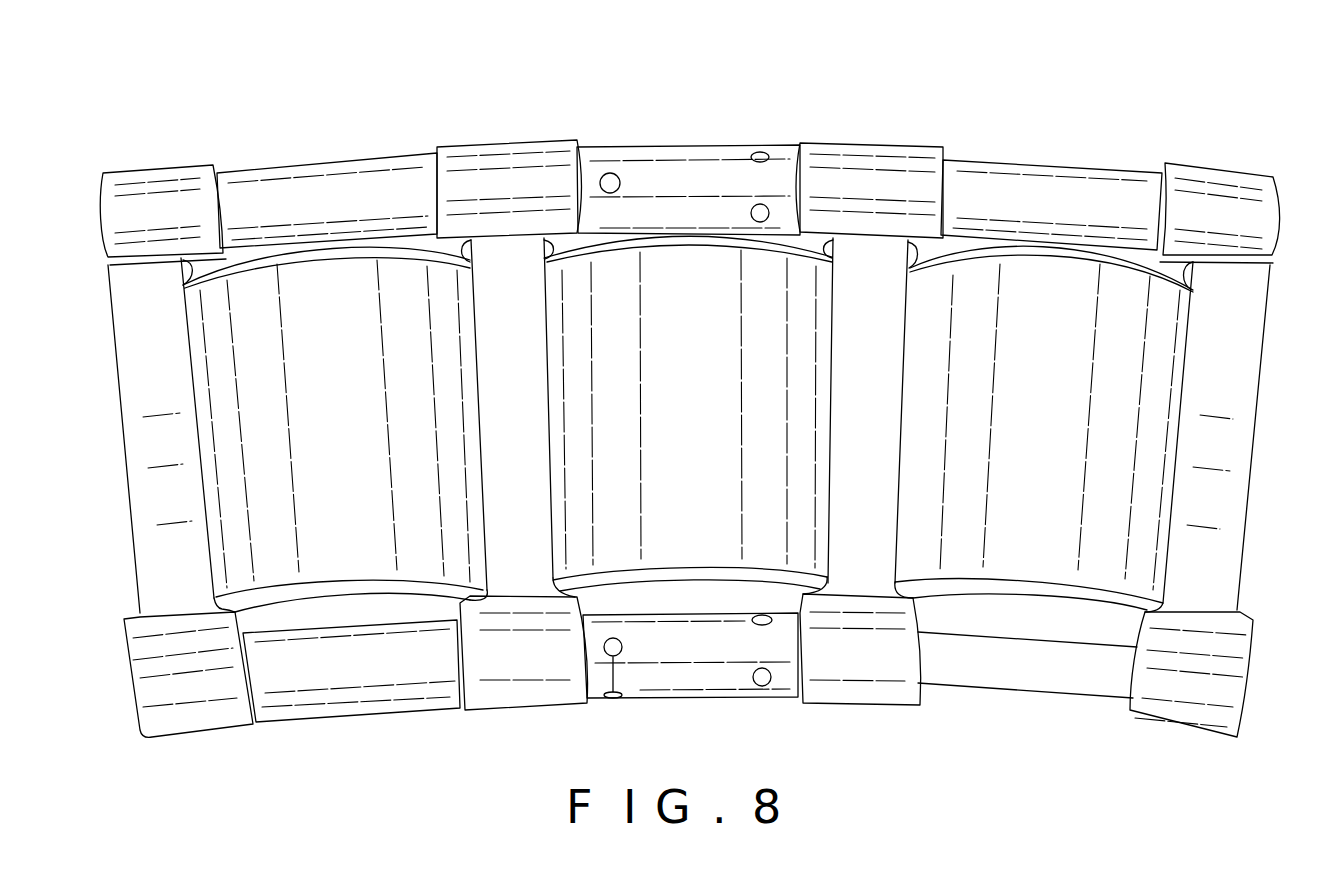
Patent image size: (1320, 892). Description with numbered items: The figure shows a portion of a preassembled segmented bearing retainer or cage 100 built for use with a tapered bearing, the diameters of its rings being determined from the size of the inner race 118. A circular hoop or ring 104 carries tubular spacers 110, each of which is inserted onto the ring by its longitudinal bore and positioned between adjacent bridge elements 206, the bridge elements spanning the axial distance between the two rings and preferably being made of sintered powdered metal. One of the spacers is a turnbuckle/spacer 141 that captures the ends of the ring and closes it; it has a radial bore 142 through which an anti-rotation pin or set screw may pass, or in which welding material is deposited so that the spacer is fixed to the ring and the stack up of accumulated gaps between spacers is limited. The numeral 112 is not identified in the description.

The segmented bearing retainer or cage 100 is at (1025, 122).
The second circular hoop or ring 104 is at (1013, 690).
The tubular spacer 110 is at (372, 211).
The panel 112 is at (370, 423).
The inner race 118 is at (1316, 448).
The turnbuckle/spacer 141 is at (690, 142).
The radial bore 142 is at (609, 172).
The bridge element 206 is at (165, 167).